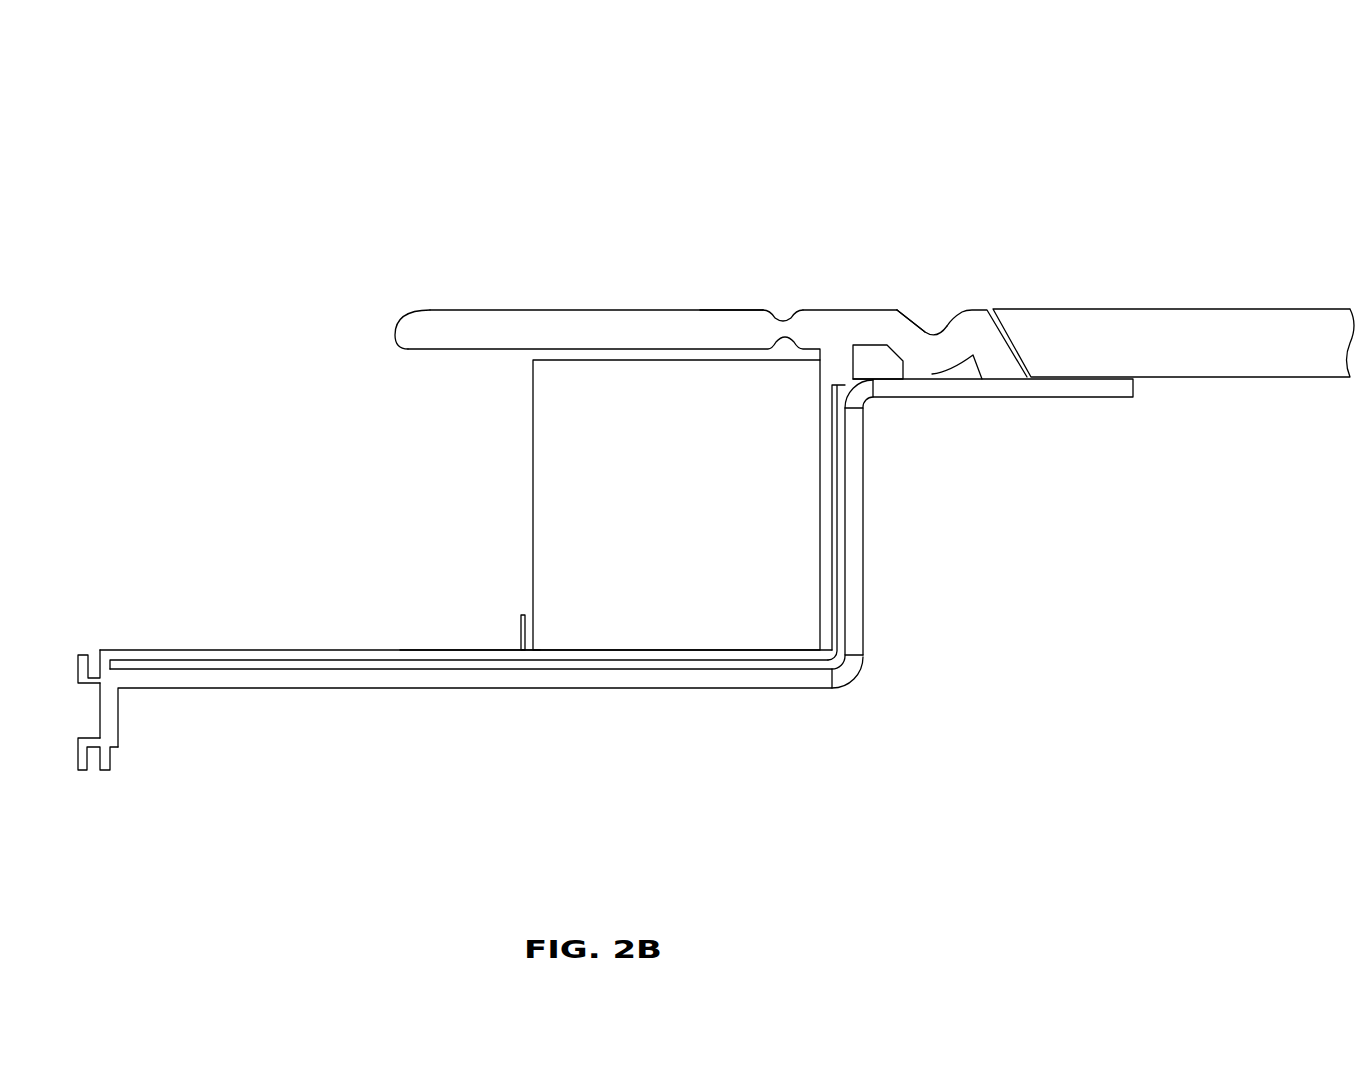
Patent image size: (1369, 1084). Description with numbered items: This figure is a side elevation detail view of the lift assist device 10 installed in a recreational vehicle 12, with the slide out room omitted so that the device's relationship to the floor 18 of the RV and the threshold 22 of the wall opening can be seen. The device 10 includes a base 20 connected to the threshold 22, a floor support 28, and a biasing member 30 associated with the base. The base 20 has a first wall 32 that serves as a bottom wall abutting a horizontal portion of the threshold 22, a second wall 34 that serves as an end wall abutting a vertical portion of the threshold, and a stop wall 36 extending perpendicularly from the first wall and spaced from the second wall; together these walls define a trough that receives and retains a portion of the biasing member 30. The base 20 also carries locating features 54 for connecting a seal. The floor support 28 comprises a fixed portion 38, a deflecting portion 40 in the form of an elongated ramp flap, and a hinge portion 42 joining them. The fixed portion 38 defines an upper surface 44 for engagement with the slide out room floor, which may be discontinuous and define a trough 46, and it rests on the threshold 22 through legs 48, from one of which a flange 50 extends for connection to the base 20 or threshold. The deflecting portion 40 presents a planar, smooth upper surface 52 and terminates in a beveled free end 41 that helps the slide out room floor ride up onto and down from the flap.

The lift assist device 10 is at (849, 128).
The recreational vehicle 12 is at (938, 772).
The floor of the RV 18 is at (1137, 340).
The base 20 is at (330, 650).
The threshold 22 is at (372, 690).
The floor support 28 is at (822, 310).
The biasing member 30 is at (535, 425).
The first wall 32 is at (470, 650).
The second wall 34 is at (846, 598).
The stop wall 36 is at (522, 614).
The fixed portion 38 is at (933, 333).
The deflecting portion 40 is at (497, 337).
The free end 41 is at (400, 327).
The hinge portion 42 is at (783, 322).
The upper surface 44 is at (866, 306).
The trough 46 is at (912, 303).
The legs 48 is at (991, 366).
The flange 50 is at (831, 427).
The upper surface 52 is at (752, 306).
The locating features 54 is at (84, 654).